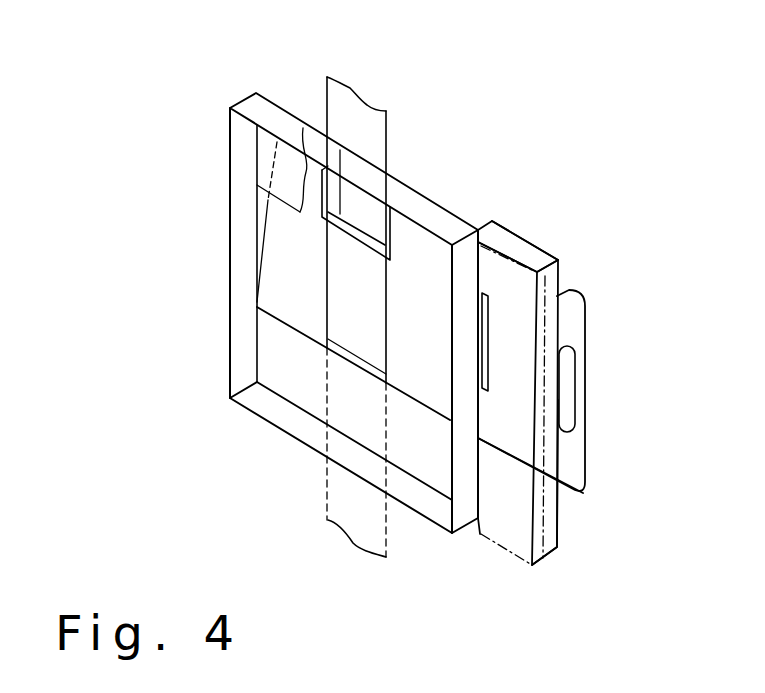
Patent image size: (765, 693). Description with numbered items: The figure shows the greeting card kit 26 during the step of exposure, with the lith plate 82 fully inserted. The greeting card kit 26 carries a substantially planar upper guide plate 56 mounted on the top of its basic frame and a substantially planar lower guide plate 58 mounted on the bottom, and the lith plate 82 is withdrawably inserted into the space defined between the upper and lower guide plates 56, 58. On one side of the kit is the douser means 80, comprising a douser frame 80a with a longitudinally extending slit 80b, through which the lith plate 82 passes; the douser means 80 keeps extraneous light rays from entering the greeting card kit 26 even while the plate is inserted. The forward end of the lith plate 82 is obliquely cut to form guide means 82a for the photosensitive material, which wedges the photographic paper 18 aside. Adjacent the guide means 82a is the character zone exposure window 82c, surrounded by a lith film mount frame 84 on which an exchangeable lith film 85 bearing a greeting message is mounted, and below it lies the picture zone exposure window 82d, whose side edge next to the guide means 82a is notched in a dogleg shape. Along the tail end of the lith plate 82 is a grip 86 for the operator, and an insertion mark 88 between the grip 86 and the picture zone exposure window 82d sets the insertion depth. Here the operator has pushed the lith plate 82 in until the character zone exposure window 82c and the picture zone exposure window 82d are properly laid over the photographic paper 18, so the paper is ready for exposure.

The photographic paper 18 is at (373, 129).
The greeting card kit 26 is at (218, 376).
The upper guide plate 56 is at (265, 152).
The lower guide plate 58 is at (283, 382).
The douser means 80 is at (537, 233).
The douser frame 80a is at (540, 258).
The slit 80b is at (548, 528).
The lith plate 82 is at (598, 300).
The guide means 82a is at (278, 289).
The character zone exposure window 82c is at (340, 150).
The picture zone exposure window 82d is at (390, 298).
The lith film mount frame 84 is at (372, 220).
The lith film 85 is at (370, 217).
The grip 86 is at (572, 455).
The insertion mark 88 is at (487, 340).